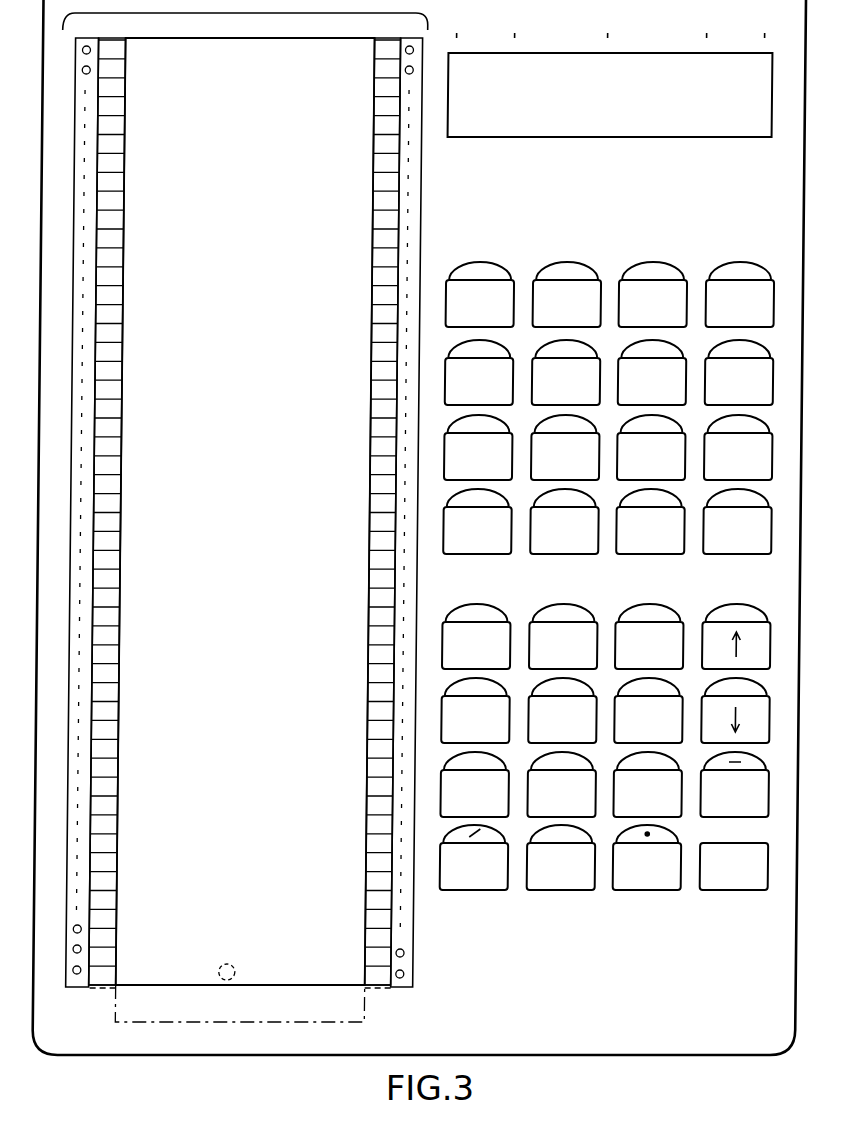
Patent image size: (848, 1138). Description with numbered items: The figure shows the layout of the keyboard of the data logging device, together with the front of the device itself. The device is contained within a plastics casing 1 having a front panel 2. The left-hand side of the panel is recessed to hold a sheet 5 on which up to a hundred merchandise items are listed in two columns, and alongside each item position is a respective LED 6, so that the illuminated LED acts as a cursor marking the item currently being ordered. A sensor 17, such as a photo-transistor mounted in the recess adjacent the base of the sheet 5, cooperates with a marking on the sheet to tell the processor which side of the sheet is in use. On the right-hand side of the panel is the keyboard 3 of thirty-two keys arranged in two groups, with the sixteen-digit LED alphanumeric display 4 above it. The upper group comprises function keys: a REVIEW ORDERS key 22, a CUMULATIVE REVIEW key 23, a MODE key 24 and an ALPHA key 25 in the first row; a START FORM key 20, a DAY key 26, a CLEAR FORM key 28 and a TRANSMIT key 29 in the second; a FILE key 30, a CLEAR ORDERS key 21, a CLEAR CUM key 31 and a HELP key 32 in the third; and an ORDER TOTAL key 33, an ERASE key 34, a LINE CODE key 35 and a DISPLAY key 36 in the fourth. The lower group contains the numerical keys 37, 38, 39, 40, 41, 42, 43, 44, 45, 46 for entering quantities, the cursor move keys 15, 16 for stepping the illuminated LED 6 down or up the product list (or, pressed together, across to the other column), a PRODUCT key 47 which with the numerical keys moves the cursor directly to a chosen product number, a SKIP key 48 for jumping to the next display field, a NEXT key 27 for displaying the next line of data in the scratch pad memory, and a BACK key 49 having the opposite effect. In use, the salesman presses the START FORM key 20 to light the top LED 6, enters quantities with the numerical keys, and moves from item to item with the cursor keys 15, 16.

The plastics casing 1 is at (269, 1062).
The front panel 2 is at (614, 639).
The keyboard 3 is at (619, 406).
The LED alphanumeric display 4 is at (654, 137).
The sheet 5 is at (213, 986).
The LED 6 is at (83, 70).
The cursor move key 15 is at (759, 681).
The cursor move key 16 is at (759, 607).
The sensor 17 is at (243, 978).
The START FORM key 20 is at (503, 347).
The CLEAR ORDERS key 21 is at (591, 422).
The REVIEW ORDERS key 22 is at (494, 265).
The CUMULATIVE REVIEW key 23 is at (587, 265).
The MODE key 24 is at (673, 265).
The ALPHA key 25 is at (741, 265).
The DAY key 26 is at (591, 347).
The NEXT key 27 is at (765, 843).
The CLEAR FORM key 28 is at (678, 347).
The TRANSMIT key 29 is at (765, 347).
The FILE key 30 is at (503, 422).
The CLEAR CUM key 31 is at (678, 422).
The HELP key 32 is at (765, 422).
The ORDER TOTAL key 33 is at (503, 497).
The ERASE key 34 is at (591, 497).
The LINE CODE key 35 is at (678, 497).
The DISPLAY key 36 is at (765, 497).
The numerical key 37 is at (499, 830).
The numerical key 38 is at (499, 756).
The numerical key 39 is at (586, 756).
The numerical key 40 is at (672, 756).
The numerical key 41 is at (499, 681).
The numerical key 42 is at (586, 681).
The numerical key 43 is at (672, 681).
The numerical key 44 is at (499, 607).
The numerical key 45 is at (586, 607).
The numerical key 46 is at (672, 607).
The PRODUCT key 47 is at (762, 757).
The SKIP key 48 is at (586, 830).
The BACK key 49 is at (672, 830).